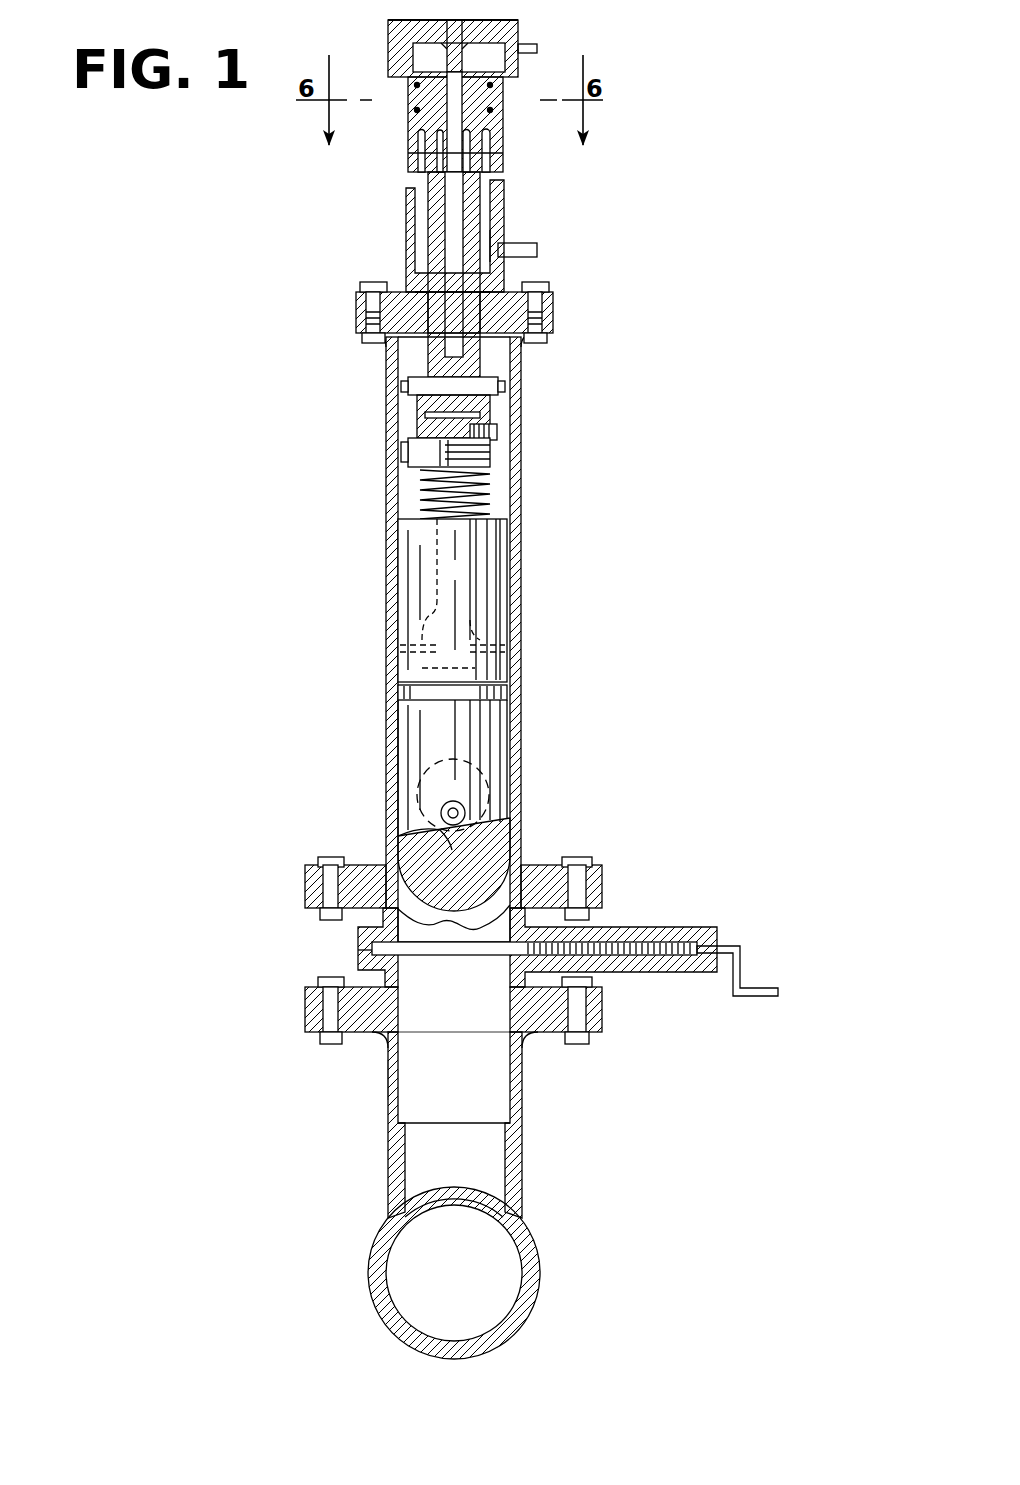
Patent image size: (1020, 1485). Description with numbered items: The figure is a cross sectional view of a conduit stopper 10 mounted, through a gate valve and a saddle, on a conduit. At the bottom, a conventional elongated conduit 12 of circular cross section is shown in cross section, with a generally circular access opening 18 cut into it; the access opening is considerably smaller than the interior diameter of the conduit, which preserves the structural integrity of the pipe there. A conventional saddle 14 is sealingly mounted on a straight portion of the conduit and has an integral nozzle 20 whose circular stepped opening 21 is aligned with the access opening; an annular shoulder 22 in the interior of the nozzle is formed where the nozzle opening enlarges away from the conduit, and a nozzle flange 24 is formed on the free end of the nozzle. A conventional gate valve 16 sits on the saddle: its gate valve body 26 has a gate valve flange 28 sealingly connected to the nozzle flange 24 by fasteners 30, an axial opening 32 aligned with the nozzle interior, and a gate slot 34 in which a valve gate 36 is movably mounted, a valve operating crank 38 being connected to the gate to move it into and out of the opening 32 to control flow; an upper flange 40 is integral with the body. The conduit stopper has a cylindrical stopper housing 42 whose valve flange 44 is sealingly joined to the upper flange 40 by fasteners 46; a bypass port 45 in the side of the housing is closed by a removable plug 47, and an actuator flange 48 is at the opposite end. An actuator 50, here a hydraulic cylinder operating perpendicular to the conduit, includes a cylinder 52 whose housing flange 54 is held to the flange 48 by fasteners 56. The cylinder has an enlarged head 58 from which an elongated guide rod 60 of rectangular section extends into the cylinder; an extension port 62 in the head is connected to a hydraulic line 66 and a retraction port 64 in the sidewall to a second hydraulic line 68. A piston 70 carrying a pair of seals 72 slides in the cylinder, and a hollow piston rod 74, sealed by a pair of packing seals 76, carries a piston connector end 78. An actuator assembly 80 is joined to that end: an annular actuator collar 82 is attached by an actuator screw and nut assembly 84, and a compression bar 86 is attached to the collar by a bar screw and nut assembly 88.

The conduit stopper 10 is at (535, 390).
The conduit 12 is at (522, 1278).
The saddle 14 is at (540, 1145).
The gate valve 16 is at (637, 918).
The access opening 18 is at (490, 1190).
The nozzle 20 is at (395, 1158).
The circular stepped opening 21 is at (430, 1057).
The annular shoulder 22 is at (505, 1117).
The nozzle flange 24 is at (590, 1018).
The gate valve body 26 is at (358, 955).
The gate valve flange 28 is at (590, 1000).
The fasteners 30 is at (330, 1015).
The axial opening 32 is at (400, 930).
The gate slot 34 is at (487, 952).
The valve gate 36 is at (668, 944).
The valve operating crank 38 is at (755, 997).
The upper flange 40 is at (602, 880).
The stopper housing 42 is at (521, 585).
The valve flange 44 is at (305, 880).
The bypass port 45 is at (420, 790).
The fasteners 46 is at (330, 857).
The removable plug 47 is at (430, 770).
The actuator flange 48 is at (553, 325).
The actuator 50 is at (517, 172).
The cylinder 52 is at (406, 210).
The housing flange 54 is at (553, 310).
The fasteners 56 is at (370, 282).
The enlarged head 58 is at (503, 21).
The guide rod 60 is at (445, 153).
The extension port 62 is at (505, 68).
The retraction port 64 is at (500, 248).
The hydraulic line 66 is at (540, 48).
The hydraulic line 68 is at (537, 250).
The piston 70 is at (388, 25).
The seals 72 is at (417, 110).
The hollow piston rod 74 is at (470, 153).
The packing seals 76 is at (423, 307).
The piston connector end 78 is at (465, 375).
The actuator assembly 80 is at (412, 422).
The actuator collar 82 is at (485, 432).
The actuator screw and nut assembly 84 is at (445, 385).
The compression bar 86 is at (465, 552).
The bar screw and nut assembly 88 is at (500, 455).